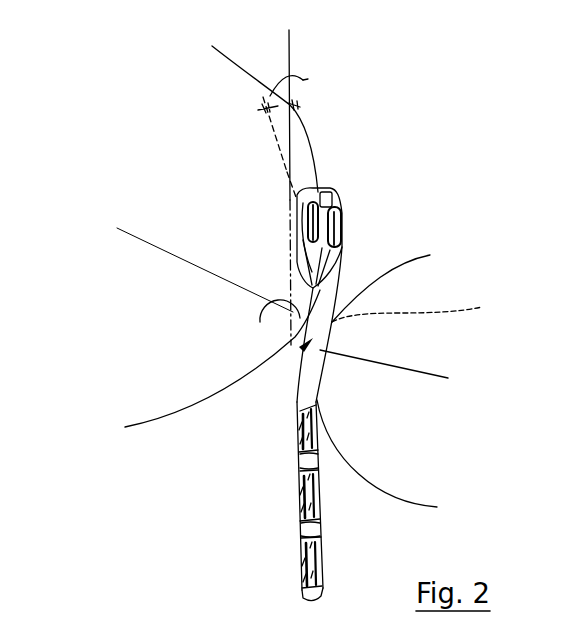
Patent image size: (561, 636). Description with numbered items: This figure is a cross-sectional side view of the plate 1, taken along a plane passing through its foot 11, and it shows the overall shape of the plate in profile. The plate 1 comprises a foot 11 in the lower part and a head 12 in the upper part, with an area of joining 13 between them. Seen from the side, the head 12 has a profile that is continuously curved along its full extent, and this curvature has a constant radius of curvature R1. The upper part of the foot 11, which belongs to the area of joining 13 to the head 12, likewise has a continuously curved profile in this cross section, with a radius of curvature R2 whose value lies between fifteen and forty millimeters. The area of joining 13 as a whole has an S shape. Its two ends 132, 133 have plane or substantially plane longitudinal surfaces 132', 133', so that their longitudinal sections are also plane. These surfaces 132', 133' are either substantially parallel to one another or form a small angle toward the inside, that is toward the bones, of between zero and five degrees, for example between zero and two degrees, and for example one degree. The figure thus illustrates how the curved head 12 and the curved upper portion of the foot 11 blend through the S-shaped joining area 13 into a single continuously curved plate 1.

The plate 1 is at (245, 433).
The foot 11 is at (298, 525).
The head 12 is at (345, 267).
The area of joining 13 is at (424, 303).
The end of the joining area 132 is at (222, 358).
The longitudinal surface 132' is at (245, 316).
The end of the joining area 133 is at (348, 222).
The longitudinal surface 133' is at (318, 148).
The radius of curvature R1 is at (205, 270).
The radius of curvature R2 is at (382, 428).